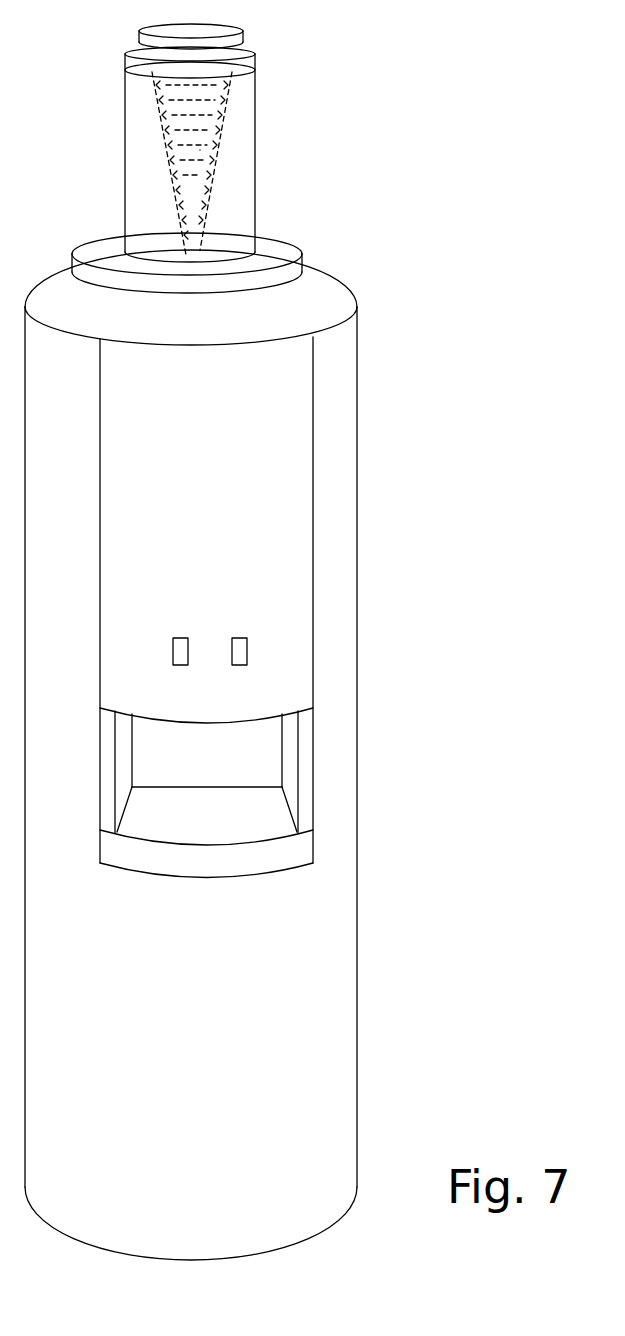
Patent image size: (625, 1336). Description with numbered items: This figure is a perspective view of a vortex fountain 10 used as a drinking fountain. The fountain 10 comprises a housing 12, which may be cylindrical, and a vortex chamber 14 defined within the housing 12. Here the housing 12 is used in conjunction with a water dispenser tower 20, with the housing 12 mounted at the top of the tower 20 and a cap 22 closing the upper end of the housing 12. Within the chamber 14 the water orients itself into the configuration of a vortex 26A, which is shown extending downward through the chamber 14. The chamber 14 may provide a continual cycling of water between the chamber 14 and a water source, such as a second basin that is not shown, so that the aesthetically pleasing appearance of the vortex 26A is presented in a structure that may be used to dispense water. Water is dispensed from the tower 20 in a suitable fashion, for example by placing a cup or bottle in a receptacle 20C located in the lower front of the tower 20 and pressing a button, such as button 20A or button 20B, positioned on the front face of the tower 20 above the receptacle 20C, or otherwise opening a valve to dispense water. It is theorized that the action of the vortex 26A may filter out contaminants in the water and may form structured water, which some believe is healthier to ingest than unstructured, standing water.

The vortex fountain 10 is at (397, 102).
The housing 12 is at (257, 135).
The vortex chamber 14 is at (247, 172).
The water dispenser tower 20 is at (355, 530).
The button 20A is at (180, 637).
The button 20B is at (240, 637).
The receptacle 20C is at (230, 828).
The cap 22 is at (207, 43).
The vortex 26A is at (155, 98).